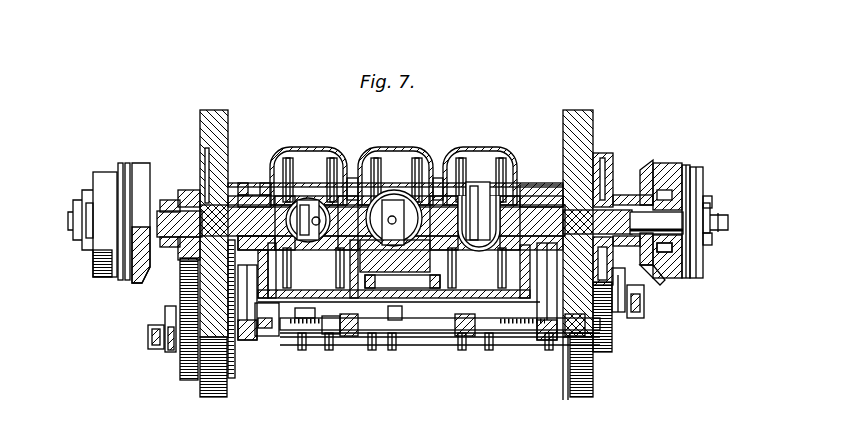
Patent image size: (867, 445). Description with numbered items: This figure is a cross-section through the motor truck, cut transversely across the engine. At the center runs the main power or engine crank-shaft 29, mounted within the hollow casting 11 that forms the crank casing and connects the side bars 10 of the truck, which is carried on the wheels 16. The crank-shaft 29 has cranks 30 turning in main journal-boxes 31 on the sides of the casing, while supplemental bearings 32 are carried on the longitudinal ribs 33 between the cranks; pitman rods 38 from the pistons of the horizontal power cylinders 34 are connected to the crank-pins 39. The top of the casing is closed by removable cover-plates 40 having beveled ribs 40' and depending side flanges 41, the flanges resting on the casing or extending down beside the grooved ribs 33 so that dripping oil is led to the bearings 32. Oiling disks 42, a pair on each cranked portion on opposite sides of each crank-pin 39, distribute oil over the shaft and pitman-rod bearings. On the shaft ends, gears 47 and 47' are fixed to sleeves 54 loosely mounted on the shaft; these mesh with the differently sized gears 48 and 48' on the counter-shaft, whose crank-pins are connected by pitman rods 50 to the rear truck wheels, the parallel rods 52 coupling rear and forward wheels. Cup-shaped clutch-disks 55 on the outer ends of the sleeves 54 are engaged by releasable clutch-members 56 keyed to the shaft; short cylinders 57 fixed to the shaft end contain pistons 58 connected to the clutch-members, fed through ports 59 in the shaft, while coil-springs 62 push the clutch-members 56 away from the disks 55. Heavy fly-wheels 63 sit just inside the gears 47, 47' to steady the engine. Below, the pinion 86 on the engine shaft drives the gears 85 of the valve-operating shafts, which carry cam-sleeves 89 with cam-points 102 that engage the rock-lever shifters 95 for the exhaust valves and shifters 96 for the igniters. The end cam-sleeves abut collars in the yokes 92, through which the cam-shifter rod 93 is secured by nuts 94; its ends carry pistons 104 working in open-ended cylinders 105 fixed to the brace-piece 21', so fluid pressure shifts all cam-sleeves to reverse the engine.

The side bars 10 is at (183, 252).
The casting 11 is at (437, 336).
The wheels 16 is at (214, 398).
The brace pieces 21' is at (397, 331).
The crank-shaft 29 is at (623, 203).
The cranks 30 is at (338, 258).
The main journal-boxes 31 is at (250, 185).
The supplemental bearings 32 is at (374, 203).
The ribs 33 is at (340, 277).
The power cylinders 34 is at (285, 168).
The pitman rods 38 is at (299, 206).
The crank-pins 39 is at (508, 150).
The cover-plates 40 is at (480, 144).
The beveled ribs 40' is at (395, 147).
The side flanges 41 is at (270, 172).
The disks 42 is at (271, 170).
The gear 47 is at (176, 201).
The gear 47' is at (624, 203).
The gear 48 is at (175, 339).
The gear 48' is at (632, 326).
The pitman rods 50 is at (172, 354).
The parallel rods 52 is at (148, 336).
The sleeves 54 is at (163, 200).
The clutch-disks 55 is at (140, 162).
The releasable clutch-members 56 is at (122, 168).
The short cylinders 57 is at (100, 227).
The pistons 58 is at (710, 198).
The ports 59 is at (722, 216).
The coil-springs 62 is at (700, 253).
The fly-wheels 63 is at (217, 112).
The gears 85 is at (232, 380).
The pinion 86 is at (213, 152).
The cam-sleeves 89 is at (400, 317).
The yokes 92 is at (343, 338).
The cam-shifter rod 93 is at (418, 345).
The nuts 94 is at (330, 350).
The shifter 95 is at (379, 355).
The shifter 96 is at (318, 350).
The cam-points 102 is at (314, 311).
The pistons 104 is at (527, 331).
The cylinders 105 is at (273, 341).